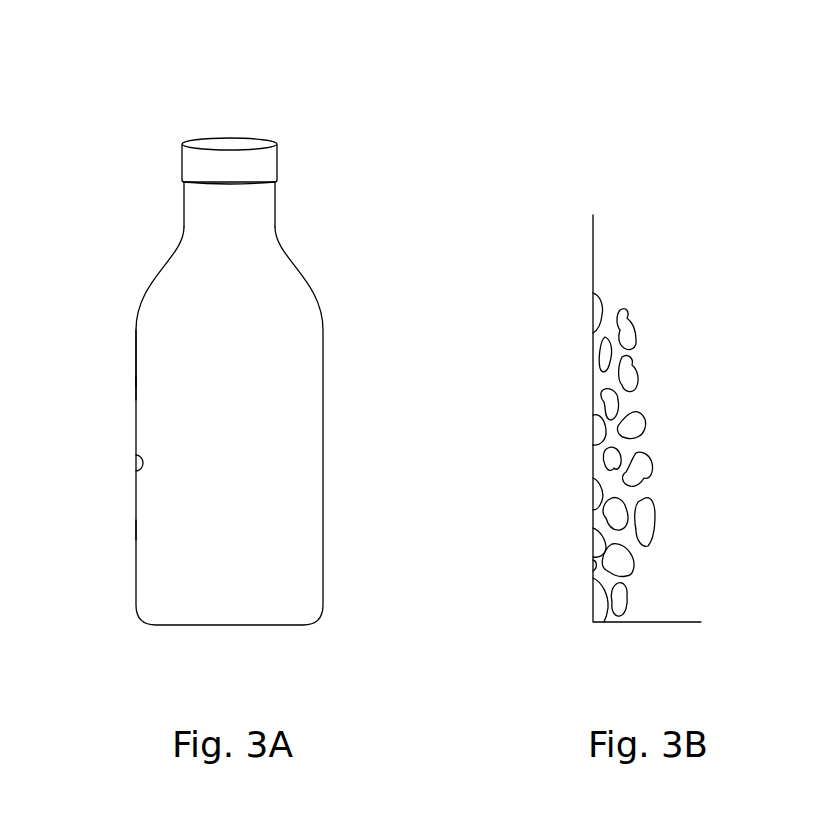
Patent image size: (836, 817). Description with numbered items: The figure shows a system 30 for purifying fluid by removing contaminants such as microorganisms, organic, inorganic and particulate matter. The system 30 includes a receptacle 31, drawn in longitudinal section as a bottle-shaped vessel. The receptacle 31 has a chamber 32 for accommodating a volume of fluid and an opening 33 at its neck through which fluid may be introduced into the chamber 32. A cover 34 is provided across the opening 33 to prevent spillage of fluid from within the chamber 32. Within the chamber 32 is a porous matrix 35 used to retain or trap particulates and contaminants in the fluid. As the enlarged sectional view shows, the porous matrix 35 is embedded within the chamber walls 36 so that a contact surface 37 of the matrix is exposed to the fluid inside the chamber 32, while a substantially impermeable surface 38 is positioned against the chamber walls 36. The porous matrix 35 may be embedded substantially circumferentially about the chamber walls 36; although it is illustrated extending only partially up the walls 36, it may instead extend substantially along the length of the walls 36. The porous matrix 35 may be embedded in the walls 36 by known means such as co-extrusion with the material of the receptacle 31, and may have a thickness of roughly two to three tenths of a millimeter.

In FIG. 3A, the system 30 is at (424, 71).
In FIG. 3A, the receptacle 31 is at (322, 470).
In FIG. 3A, the chamber 32 is at (236, 427).
In FIG. 3A, the opening 33 is at (205, 247).
In FIG. 3A, the cover 34 is at (218, 137).
In FIG. 3A, the porous matrix 35 is at (137, 472).
In FIG. 3B, the porous matrix 35 is at (635, 306).
In FIG. 3A, the chamber walls 36 is at (138, 330).
In FIG. 3B, the chamber walls 36 is at (593, 252).
In FIG. 3A, the contact surface 37 is at (141, 382).
In FIG. 3B, the contact surface 37 is at (648, 423).
In FIG. 3A, the substantially impermeable surface 38 is at (135, 528).
In FIG. 3B, the substantially impermeable surface 38 is at (593, 570).